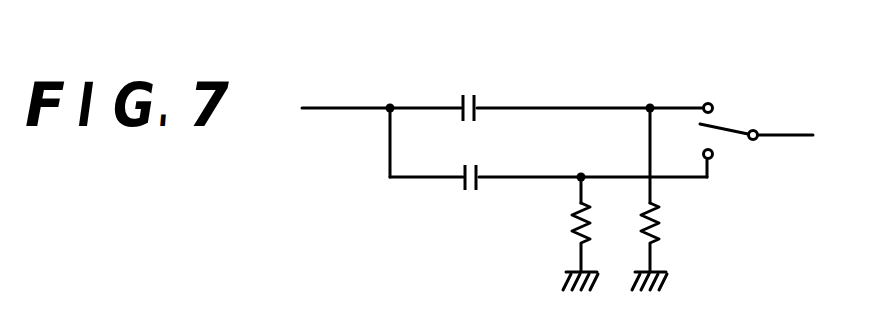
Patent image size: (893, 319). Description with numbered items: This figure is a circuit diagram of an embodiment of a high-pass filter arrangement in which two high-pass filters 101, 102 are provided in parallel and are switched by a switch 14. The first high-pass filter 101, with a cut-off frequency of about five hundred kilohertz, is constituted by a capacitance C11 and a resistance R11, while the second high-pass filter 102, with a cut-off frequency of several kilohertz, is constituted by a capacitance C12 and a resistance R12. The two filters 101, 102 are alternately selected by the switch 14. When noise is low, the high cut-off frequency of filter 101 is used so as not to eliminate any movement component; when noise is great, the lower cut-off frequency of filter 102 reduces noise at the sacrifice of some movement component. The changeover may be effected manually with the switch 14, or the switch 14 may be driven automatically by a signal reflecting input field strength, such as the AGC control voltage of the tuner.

The high-pass filter 101 is at (419, 72).
The high-pass filter 102 is at (417, 209).
The switch 14 is at (732, 128).
The capacitance C11 is at (478, 93).
The capacitance C12 is at (465, 192).
The resistance R11 is at (662, 230).
The resistance R12 is at (570, 220).